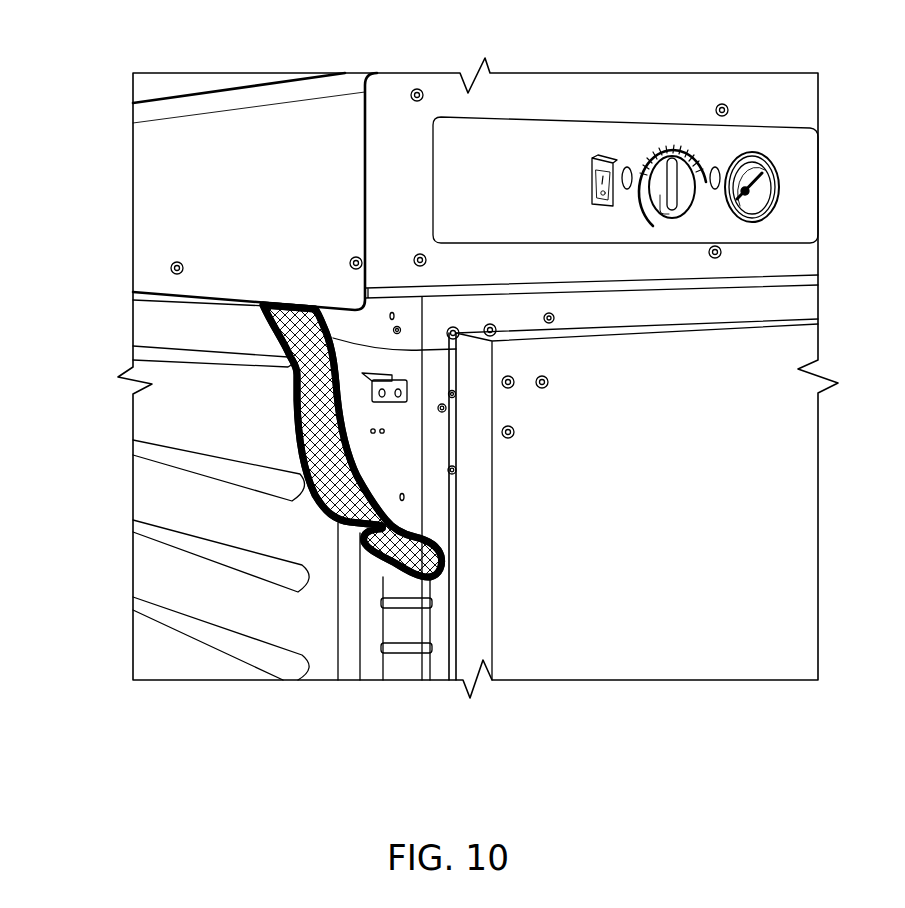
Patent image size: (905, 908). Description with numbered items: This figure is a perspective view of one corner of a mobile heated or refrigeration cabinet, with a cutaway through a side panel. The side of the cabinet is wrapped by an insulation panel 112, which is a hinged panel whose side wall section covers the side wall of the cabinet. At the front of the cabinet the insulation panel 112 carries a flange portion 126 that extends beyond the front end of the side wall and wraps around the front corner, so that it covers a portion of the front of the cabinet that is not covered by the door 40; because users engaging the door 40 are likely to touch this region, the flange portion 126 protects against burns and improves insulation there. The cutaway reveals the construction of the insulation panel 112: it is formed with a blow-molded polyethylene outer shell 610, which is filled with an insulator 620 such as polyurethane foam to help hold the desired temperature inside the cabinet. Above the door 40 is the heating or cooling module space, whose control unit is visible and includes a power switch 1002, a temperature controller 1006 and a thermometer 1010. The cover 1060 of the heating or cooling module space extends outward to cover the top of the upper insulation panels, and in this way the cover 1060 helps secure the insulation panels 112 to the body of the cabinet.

The cover 1060 is at (170, 203).
The power switch 1002 is at (607, 160).
The temperature controller 1006 is at (673, 145).
The thermometer 1010 is at (753, 160).
The insulator 620 is at (312, 387).
The flange portion 126 is at (442, 550).
The outer shell 610 is at (415, 575).
The insulation panels 112 is at (180, 660).
The door 40 is at (683, 660).